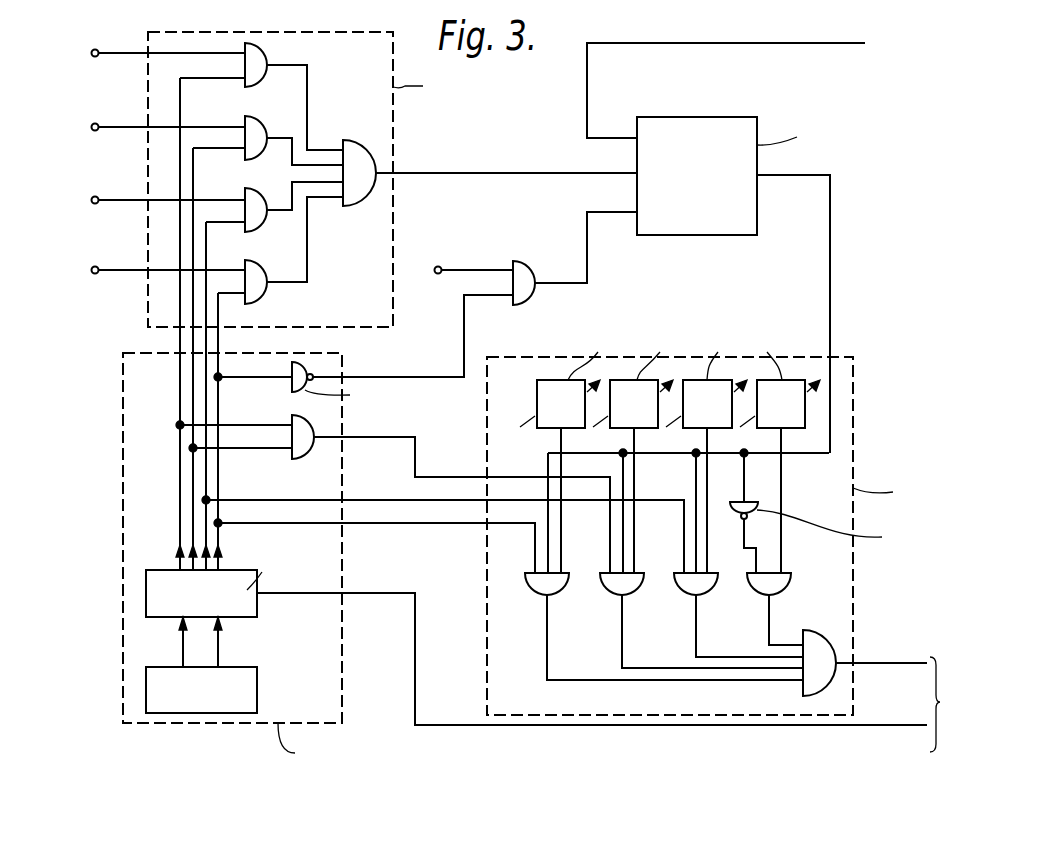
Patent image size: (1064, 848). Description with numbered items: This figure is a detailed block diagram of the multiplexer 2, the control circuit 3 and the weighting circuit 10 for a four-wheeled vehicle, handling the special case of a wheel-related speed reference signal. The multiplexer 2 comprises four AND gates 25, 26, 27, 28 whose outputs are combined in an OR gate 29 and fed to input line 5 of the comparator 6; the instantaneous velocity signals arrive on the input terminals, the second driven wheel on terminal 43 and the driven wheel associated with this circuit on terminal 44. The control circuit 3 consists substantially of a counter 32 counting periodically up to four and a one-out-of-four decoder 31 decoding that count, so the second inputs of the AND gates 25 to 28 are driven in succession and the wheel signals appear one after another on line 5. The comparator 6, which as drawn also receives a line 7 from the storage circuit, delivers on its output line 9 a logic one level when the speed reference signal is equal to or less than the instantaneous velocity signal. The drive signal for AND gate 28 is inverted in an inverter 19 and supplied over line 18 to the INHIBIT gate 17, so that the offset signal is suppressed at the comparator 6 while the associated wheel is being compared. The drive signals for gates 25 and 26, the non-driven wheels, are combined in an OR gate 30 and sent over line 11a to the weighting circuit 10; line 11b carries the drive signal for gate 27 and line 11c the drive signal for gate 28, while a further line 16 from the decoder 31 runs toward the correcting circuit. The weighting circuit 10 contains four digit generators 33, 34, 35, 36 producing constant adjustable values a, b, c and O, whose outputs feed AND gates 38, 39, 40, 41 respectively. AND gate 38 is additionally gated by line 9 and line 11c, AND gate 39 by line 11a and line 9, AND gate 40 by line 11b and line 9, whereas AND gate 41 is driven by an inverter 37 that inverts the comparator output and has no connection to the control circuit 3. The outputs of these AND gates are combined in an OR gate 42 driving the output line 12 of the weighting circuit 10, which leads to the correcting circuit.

The multiplexer 2 is at (347, 313).
The control circuit 3 is at (308, 693).
The input line 5 is at (500, 173).
The comparator 6 is at (704, 186).
The line from storage circuit 7 is at (679, 42).
The output line 9 is at (830, 238).
The weighting circuit 10 is at (532, 705).
The line 11a is at (418, 451).
The line 11b is at (371, 500).
The line 11c is at (430, 525).
The output line 12 is at (888, 663).
The line to correcting circuit 16 is at (384, 597).
The INHIBIT gate 17 is at (534, 298).
The line 18 is at (413, 377).
The inverter 19 is at (312, 368).
The AND gate 25 is at (272, 56).
The AND gate 26 is at (245, 118).
The AND gate 27 is at (246, 190).
The AND gate 28 is at (249, 263).
The OR gate 29 is at (352, 140).
The OR gate 30 is at (292, 420).
The 1-out-of-4 decoder 31 is at (150, 597).
The counter 32 is at (146, 685).
The digit generator 33 is at (545, 430).
The digit generator 34 is at (620, 430).
The digit generator 35 is at (692, 430).
The digit generator 36 is at (805, 410).
The inverter 37 is at (758, 504).
The AND gate 38 is at (535, 595).
The AND gate 39 is at (608, 595).
The AND gate 40 is at (682, 595).
The AND gate 41 is at (738, 618).
The OR gate 42 is at (812, 630).
The input terminal 43 is at (146, 200).
The input terminal 44 is at (146, 270).